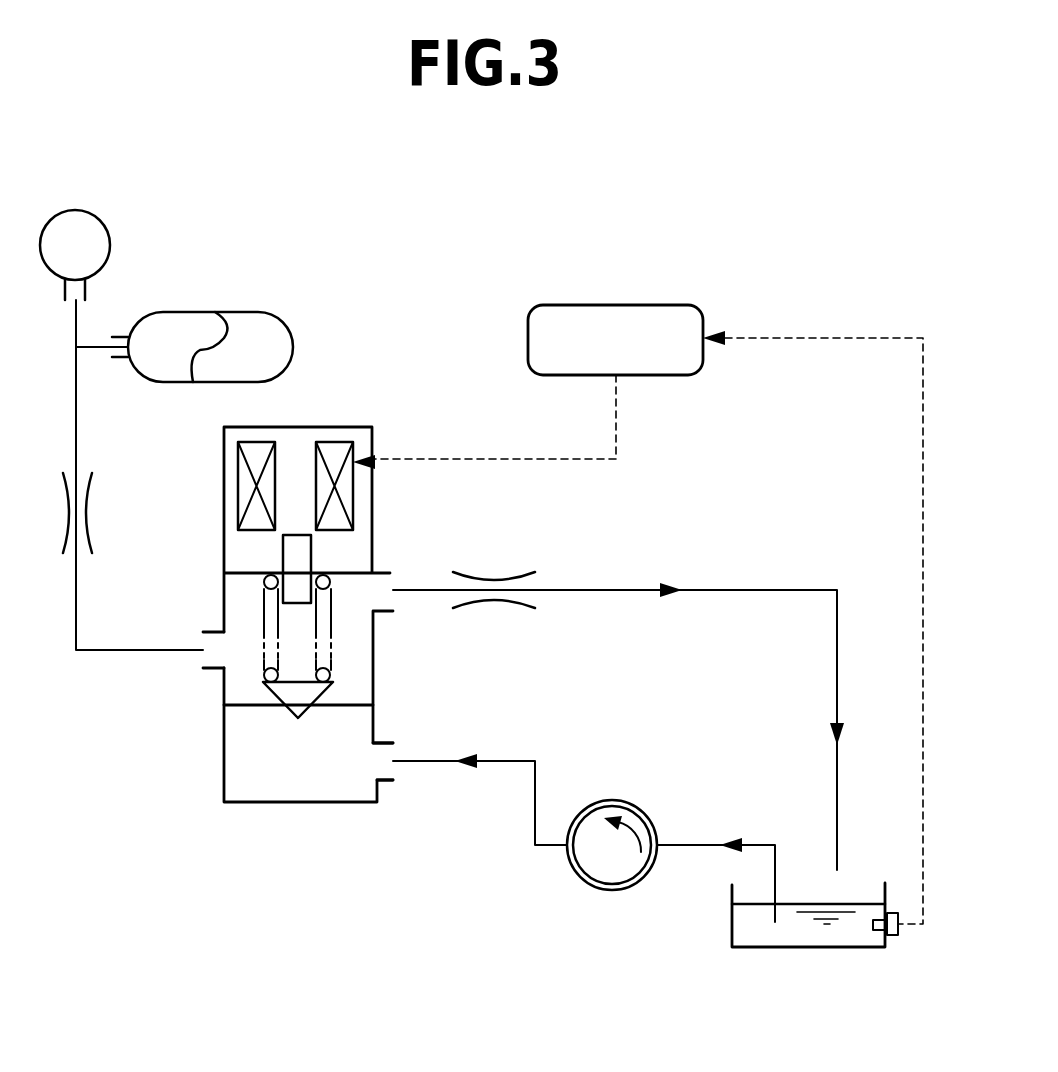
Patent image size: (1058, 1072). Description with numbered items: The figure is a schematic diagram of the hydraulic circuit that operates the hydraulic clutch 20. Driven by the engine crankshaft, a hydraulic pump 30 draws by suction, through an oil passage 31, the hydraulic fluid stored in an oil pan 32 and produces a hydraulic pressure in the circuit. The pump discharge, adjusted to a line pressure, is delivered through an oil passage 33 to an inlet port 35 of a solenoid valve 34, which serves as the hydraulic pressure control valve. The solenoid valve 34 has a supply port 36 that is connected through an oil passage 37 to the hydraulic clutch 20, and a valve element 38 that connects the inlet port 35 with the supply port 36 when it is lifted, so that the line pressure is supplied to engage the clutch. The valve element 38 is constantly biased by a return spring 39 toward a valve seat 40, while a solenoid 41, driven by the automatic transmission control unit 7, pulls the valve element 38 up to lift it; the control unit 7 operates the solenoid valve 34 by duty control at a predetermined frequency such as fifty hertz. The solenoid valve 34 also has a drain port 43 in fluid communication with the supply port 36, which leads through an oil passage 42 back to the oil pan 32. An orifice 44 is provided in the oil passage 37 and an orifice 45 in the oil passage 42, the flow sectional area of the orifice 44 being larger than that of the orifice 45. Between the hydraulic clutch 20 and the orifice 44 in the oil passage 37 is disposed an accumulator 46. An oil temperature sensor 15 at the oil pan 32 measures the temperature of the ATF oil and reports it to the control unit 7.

The automatic transmission control unit 7 is at (650, 305).
The oil temperature sensor 15 is at (893, 940).
The hydraulic clutch 20 is at (110, 242).
The hydraulic pump 30 is at (623, 873).
The oil passage 31 is at (697, 843).
The oil pan 32 is at (807, 948).
The oil passage 33 is at (505, 758).
The solenoid valve 34 is at (198, 775).
The inlet port 35 is at (398, 770).
The supply port 36 is at (205, 662).
The oil passage 37 is at (78, 607).
The valve element 38 is at (303, 712).
The return spring 39 is at (340, 668).
The valve seat 40 is at (260, 707).
The solenoid 41 is at (337, 448).
The oil passage 42 is at (742, 585).
The drain port 43 is at (397, 579).
The orifice 44 is at (92, 488).
The orifice 45 is at (518, 603).
The accumulator 46 is at (245, 312).